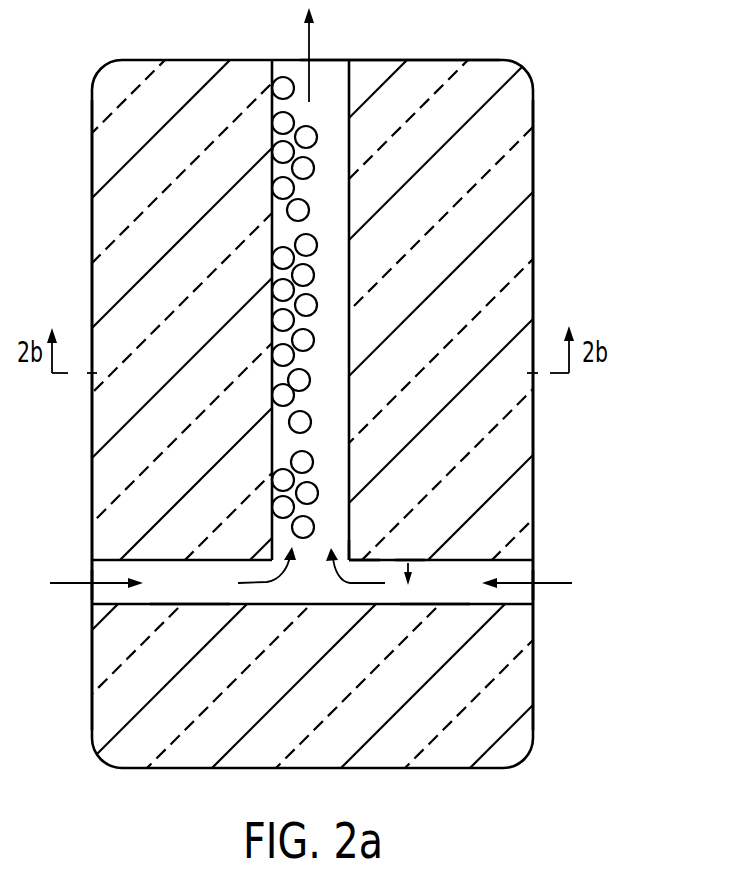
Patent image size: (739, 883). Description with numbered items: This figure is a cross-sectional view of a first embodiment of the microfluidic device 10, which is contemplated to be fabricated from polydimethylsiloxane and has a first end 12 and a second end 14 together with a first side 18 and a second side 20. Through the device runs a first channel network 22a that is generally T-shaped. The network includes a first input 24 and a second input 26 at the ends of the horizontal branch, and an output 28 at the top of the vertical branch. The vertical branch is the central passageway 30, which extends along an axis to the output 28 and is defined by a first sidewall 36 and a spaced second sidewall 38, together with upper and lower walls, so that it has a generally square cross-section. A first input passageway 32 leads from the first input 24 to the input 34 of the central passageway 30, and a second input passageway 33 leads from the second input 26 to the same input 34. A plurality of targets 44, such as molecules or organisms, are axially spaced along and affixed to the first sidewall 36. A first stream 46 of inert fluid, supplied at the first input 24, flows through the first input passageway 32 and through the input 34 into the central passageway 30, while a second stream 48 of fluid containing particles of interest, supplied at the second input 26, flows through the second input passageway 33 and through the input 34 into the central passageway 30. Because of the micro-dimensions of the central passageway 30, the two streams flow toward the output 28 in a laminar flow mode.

The microfluidic device 10 is at (553, 778).
The first end 12 is at (187, 768).
The second end 14 is at (432, 61).
The first side 18 is at (92, 467).
The second side 20 is at (533, 427).
The channel network 22a is at (412, 561).
The first input 24 is at (92, 594).
The second input 26 is at (534, 595).
The output 28 is at (332, 61).
The central passageway 30 is at (330, 290).
The first input passageway 32 is at (168, 605).
The second input passageway 33 is at (428, 605).
The input 34 is at (349, 559).
The first sidewall 36 is at (277, 462).
The second sidewall 38 is at (350, 418).
The targets 44 is at (277, 125).
The first stream 46 is at (72, 583).
The second stream 48 is at (555, 582).